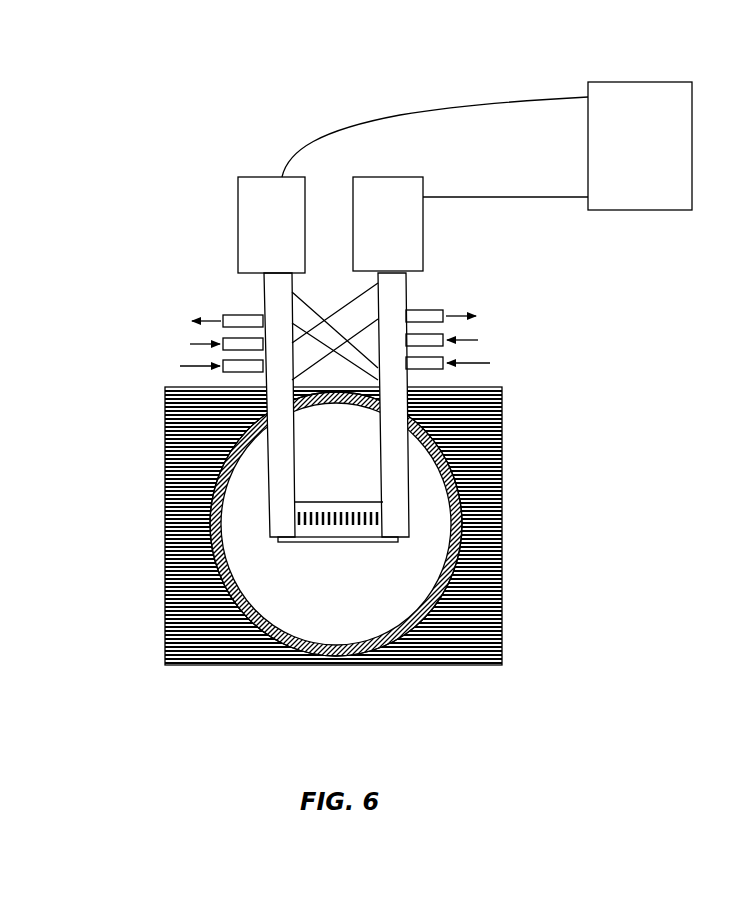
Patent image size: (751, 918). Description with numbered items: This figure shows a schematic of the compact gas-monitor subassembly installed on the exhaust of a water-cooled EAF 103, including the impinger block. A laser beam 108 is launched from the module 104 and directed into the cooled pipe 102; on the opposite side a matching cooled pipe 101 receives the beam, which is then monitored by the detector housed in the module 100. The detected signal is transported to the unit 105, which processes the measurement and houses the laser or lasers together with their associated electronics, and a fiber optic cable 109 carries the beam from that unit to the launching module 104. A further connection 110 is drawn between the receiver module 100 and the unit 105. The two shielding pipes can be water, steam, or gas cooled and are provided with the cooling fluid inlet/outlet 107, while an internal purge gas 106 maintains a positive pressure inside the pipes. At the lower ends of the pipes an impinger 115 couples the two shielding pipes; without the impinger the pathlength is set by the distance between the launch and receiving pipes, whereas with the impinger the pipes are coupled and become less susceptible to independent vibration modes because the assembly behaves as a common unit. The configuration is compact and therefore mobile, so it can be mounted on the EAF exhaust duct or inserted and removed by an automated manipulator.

The module 100 is at (385, 180).
The cooled pipe 101 is at (405, 295).
The cooled pipe 102 is at (262, 300).
The EAF 103 is at (502, 633).
The module 104 is at (244, 177).
The unit 105 is at (633, 88).
The internal purge gas 106 is at (339, 368).
The cooling fluid inlet/outlet 107 is at (335, 330).
The laser beam 108 is at (332, 525).
The fiber optic cable 109 is at (462, 106).
The connection line 110 is at (538, 205).
The impinger 115 is at (305, 542).